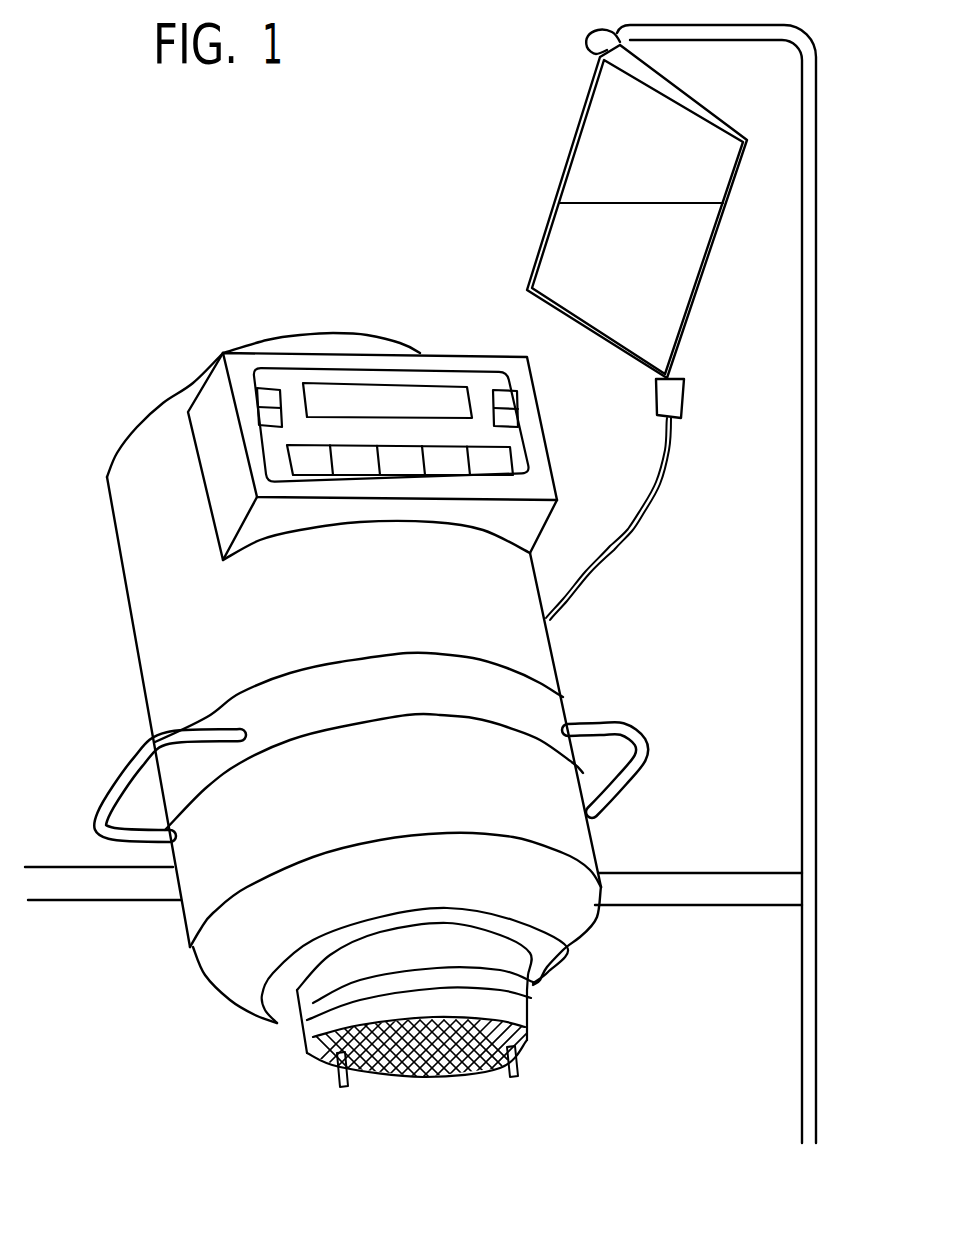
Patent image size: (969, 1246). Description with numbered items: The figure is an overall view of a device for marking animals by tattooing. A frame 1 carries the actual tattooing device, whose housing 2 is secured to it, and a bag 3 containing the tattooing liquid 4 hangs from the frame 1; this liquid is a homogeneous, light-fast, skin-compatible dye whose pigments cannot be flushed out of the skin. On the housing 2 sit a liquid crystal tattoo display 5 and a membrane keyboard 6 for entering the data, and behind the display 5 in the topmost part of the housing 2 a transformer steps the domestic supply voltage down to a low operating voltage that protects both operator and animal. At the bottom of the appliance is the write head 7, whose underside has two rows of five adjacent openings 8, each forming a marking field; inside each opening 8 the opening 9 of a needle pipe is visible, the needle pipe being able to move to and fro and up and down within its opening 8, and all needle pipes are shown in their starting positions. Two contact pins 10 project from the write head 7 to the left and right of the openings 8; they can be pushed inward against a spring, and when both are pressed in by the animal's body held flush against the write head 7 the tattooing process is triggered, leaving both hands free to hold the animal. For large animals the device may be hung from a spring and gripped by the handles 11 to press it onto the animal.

The frame 1 is at (690, 888).
The housing 2 is at (180, 650).
The bag 3 is at (617, 143).
The tattooing liquid 4 is at (580, 245).
The tattoo display 5 is at (387, 400).
The membrane keyboard 6 is at (350, 460).
The write head 7 is at (280, 1013).
The openings 8 is at (390, 1083).
The opening of needle pipe 9 is at (463, 1083).
The contact pins 10 is at (340, 1085).
The handles 11 is at (117, 780).